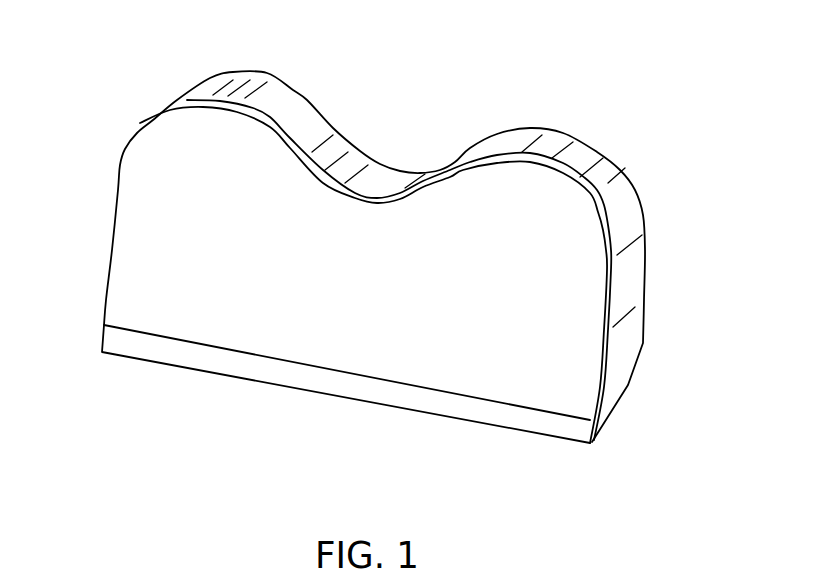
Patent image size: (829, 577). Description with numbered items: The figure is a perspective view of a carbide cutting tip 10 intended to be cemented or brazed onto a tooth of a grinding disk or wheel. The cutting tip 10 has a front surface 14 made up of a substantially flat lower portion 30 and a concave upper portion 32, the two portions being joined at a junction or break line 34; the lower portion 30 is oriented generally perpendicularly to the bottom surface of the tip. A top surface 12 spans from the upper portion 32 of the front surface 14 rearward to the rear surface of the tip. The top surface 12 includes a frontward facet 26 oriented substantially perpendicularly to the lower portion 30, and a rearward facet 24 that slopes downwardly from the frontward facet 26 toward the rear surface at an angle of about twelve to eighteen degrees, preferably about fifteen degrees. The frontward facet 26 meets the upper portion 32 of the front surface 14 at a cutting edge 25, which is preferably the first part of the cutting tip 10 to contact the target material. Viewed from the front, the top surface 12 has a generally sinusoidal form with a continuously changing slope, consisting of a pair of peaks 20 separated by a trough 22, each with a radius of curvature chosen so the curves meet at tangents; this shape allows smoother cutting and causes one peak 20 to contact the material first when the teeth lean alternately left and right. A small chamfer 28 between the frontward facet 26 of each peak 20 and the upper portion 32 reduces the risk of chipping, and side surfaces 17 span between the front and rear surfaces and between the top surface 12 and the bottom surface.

The carbide cutting tip 10 is at (670, 100).
The top surface 12 is at (549, 128).
The front surface 14 is at (155, 262).
The side surfaces 17 is at (628, 282).
The peaks 20 is at (272, 97).
The trough 22 is at (374, 177).
The rearward facet 24 is at (620, 172).
The cutting edge 25 is at (280, 148).
The frontward facet 26 is at (505, 158).
The chamfer 28 is at (217, 115).
The lower portion 30 is at (160, 352).
The upper portion 32 is at (338, 332).
The break line 34 is at (490, 398).